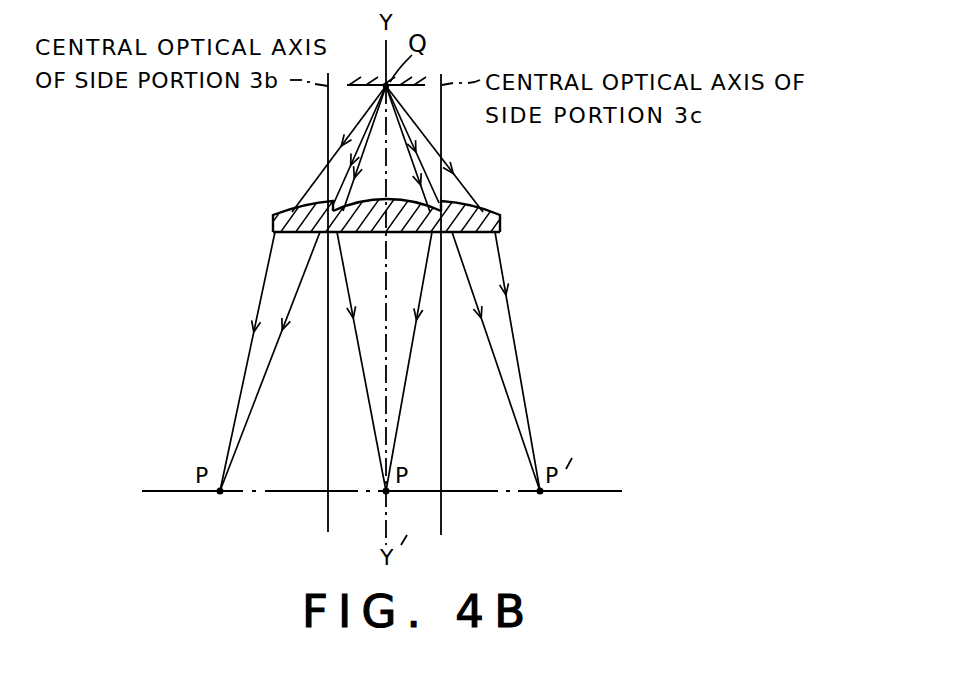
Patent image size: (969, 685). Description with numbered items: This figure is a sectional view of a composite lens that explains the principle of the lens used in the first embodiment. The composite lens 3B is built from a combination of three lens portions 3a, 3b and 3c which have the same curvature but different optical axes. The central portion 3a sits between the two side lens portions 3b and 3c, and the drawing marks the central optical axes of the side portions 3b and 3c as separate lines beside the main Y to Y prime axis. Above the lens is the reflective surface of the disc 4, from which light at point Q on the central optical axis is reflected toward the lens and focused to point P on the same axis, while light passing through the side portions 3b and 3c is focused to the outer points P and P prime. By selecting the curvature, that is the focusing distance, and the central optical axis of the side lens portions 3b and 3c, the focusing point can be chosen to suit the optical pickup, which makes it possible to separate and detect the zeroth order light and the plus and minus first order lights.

The lens portion 3a is at (368, 233).
The side lens portion 3b is at (288, 210).
The side lens portion 3c is at (500, 212).
The lens 3B is at (404, 219).
The disc 4 is at (414, 79).